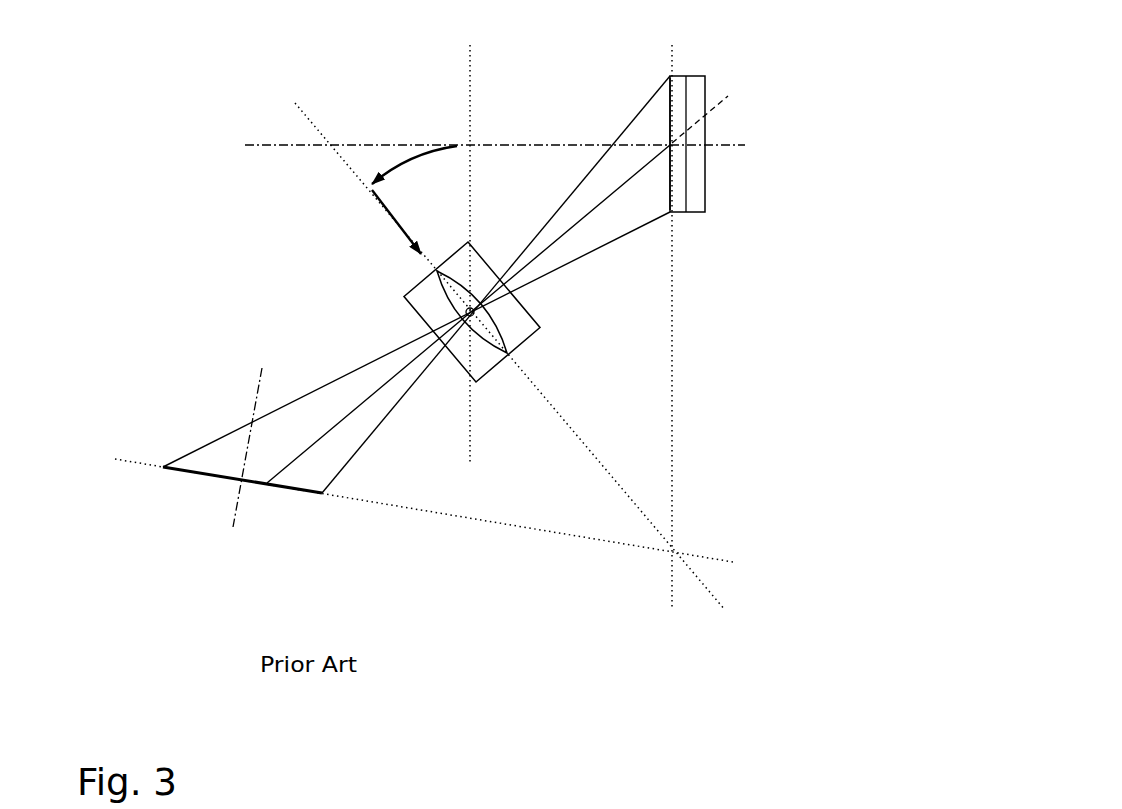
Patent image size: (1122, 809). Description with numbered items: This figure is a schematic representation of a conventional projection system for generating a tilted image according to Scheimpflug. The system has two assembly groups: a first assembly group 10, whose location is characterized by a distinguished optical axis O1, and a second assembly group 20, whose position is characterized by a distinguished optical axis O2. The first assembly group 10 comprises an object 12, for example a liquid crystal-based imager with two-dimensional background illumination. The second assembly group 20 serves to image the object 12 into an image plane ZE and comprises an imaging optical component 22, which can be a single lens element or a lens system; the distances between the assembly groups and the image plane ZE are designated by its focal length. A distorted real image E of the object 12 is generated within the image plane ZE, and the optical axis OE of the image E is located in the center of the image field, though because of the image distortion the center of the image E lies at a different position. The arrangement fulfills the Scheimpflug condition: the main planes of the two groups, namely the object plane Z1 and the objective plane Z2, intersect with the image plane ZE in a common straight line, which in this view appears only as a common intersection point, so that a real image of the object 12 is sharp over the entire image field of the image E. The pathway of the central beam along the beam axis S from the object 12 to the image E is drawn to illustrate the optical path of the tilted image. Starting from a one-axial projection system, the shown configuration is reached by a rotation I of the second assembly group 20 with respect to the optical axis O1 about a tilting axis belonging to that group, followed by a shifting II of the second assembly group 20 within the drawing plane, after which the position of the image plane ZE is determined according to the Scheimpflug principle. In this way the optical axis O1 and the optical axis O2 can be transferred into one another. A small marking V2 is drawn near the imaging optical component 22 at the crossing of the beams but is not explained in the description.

The first assembly group 10 is at (705, 195).
The object 12 is at (670, 165).
The second assembly group 20 is at (485, 263).
The imaging optical component 22 is at (443, 300).
The optical axis of the first assembly group O1 is at (577, 143).
The optical axis of the second assembly group O2 is at (717, 97).
The vertex of lens V2 is at (485, 306).
The beam axis S is at (380, 391).
The image E is at (234, 479).
The optical axis of the image OE is at (247, 455).
The image plane ZE is at (378, 500).
The object plane Z1 is at (673, 462).
The objective plane Z2 is at (630, 503).
The rotation I is at (414, 147).
The shifting II is at (396, 222).